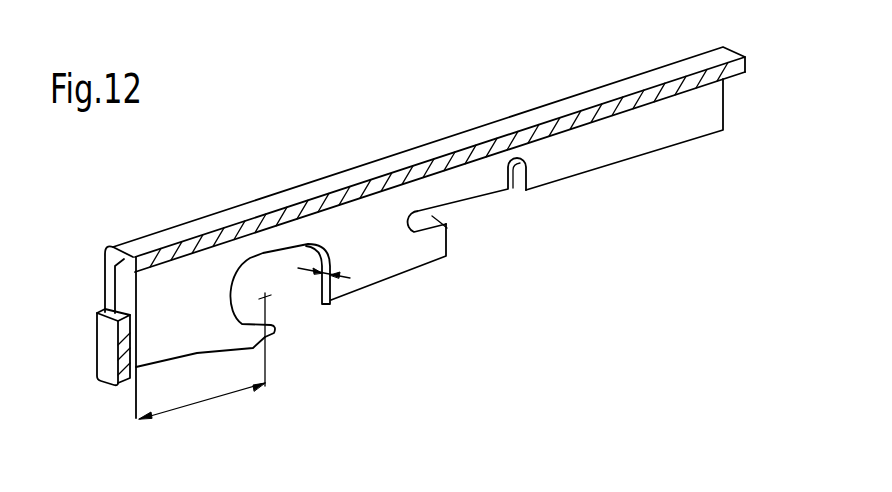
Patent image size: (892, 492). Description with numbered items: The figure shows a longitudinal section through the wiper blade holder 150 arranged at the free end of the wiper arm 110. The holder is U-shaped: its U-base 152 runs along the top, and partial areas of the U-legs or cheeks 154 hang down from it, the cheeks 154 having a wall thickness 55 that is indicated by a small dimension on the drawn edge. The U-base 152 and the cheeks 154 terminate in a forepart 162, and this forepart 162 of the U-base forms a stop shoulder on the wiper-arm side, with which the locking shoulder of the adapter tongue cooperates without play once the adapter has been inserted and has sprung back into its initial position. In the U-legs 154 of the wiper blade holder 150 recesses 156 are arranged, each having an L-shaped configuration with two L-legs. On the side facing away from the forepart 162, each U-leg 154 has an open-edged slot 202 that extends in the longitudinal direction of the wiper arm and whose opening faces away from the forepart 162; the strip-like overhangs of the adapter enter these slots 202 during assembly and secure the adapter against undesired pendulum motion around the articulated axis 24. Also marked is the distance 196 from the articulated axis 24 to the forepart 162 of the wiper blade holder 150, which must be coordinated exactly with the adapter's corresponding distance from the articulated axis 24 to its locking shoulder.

The wiper arm 110 is at (626, 78).
The wiper blade holder 150 is at (236, 204).
The U-base 152 is at (303, 190).
The U-legs 154 is at (413, 252).
The recesses 156 is at (285, 280).
The forepart 162 is at (110, 248).
The distance 196 is at (204, 398).
The open-edged slot 202 is at (434, 218).
The articulated axis 24 is at (268, 297).
The thickness 55 is at (331, 300).